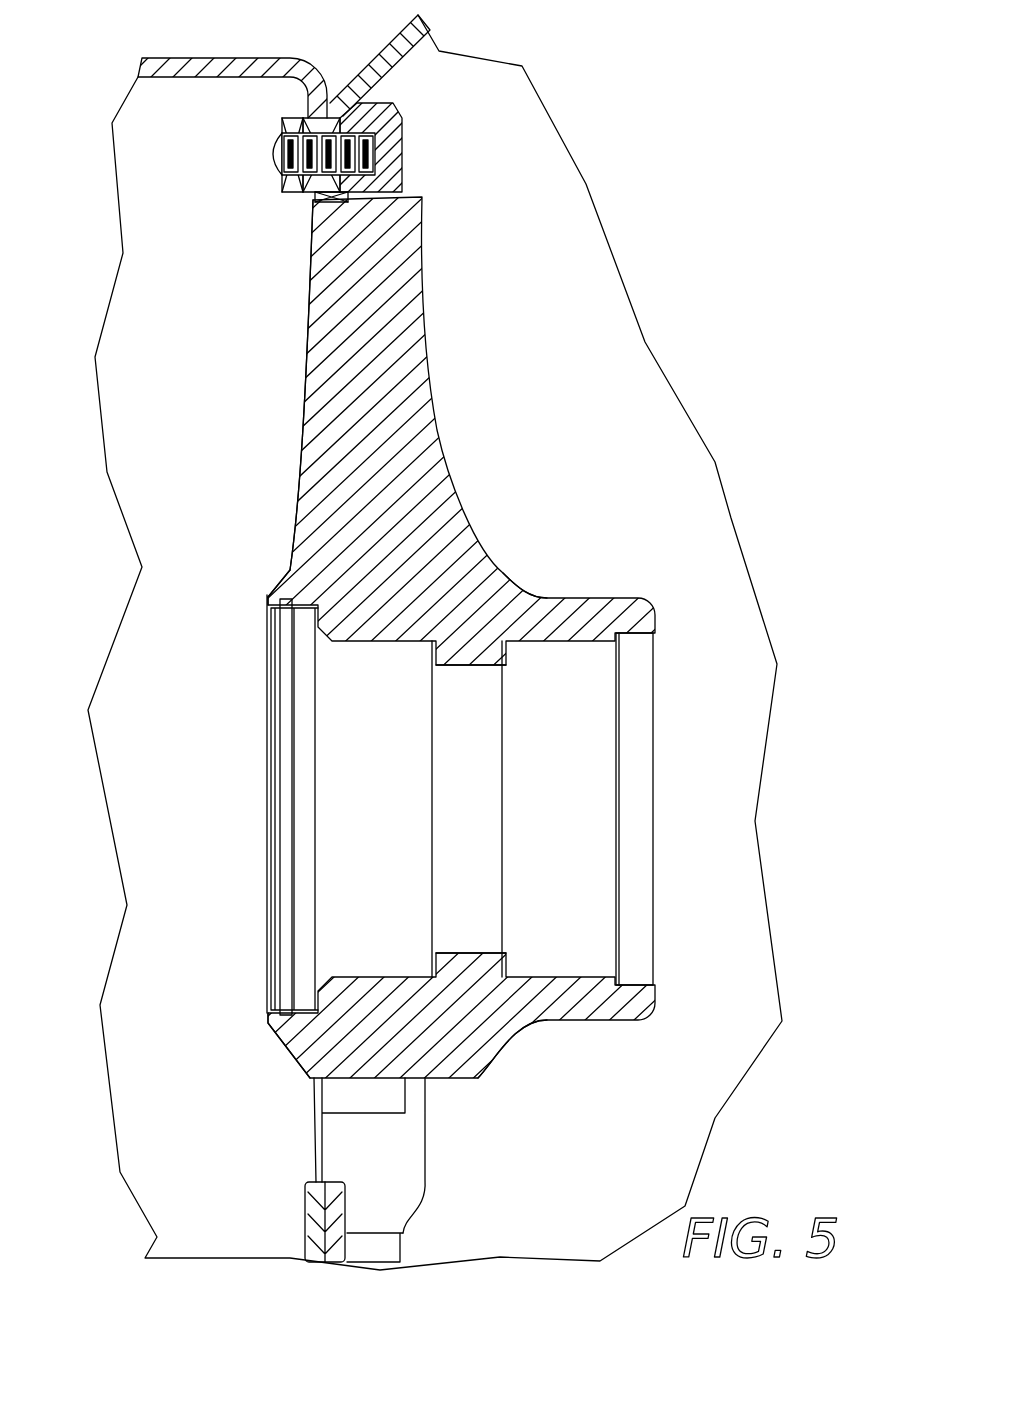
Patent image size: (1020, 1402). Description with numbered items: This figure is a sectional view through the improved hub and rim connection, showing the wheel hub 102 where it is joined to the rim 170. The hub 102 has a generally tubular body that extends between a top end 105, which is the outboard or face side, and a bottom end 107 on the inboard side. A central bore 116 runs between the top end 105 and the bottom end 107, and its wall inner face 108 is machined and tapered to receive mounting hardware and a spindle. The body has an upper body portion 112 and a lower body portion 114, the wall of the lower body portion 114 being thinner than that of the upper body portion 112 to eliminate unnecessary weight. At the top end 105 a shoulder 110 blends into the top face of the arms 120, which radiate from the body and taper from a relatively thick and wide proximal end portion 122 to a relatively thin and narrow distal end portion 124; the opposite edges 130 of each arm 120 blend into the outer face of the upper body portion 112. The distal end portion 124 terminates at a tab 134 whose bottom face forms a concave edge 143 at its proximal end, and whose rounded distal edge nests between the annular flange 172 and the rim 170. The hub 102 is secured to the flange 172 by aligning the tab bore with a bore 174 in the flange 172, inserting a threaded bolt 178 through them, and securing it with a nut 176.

The wheel hub 102 is at (570, 540).
The top end 105 is at (267, 692).
The bottom end 107 is at (655, 690).
The wall inner face 108 is at (557, 641).
The shoulder 110 is at (290, 560).
The upper body portion 112 is at (405, 1082).
The lower body portion 114 is at (555, 1030).
The central bore 116 is at (467, 952).
The arms 120 is at (308, 388).
The proximal end portion 122 is at (300, 482).
The distal end portion 124 is at (313, 248).
The edges 130 is at (412, 1199).
The tab 134 is at (392, 106).
The concave edge 143 is at (420, 197).
The rim 170 is at (152, 58).
The annular flange 172 is at (305, 116).
The bore 174 is at (312, 200).
The nut 176 is at (282, 190).
The bolt 178 is at (398, 172).